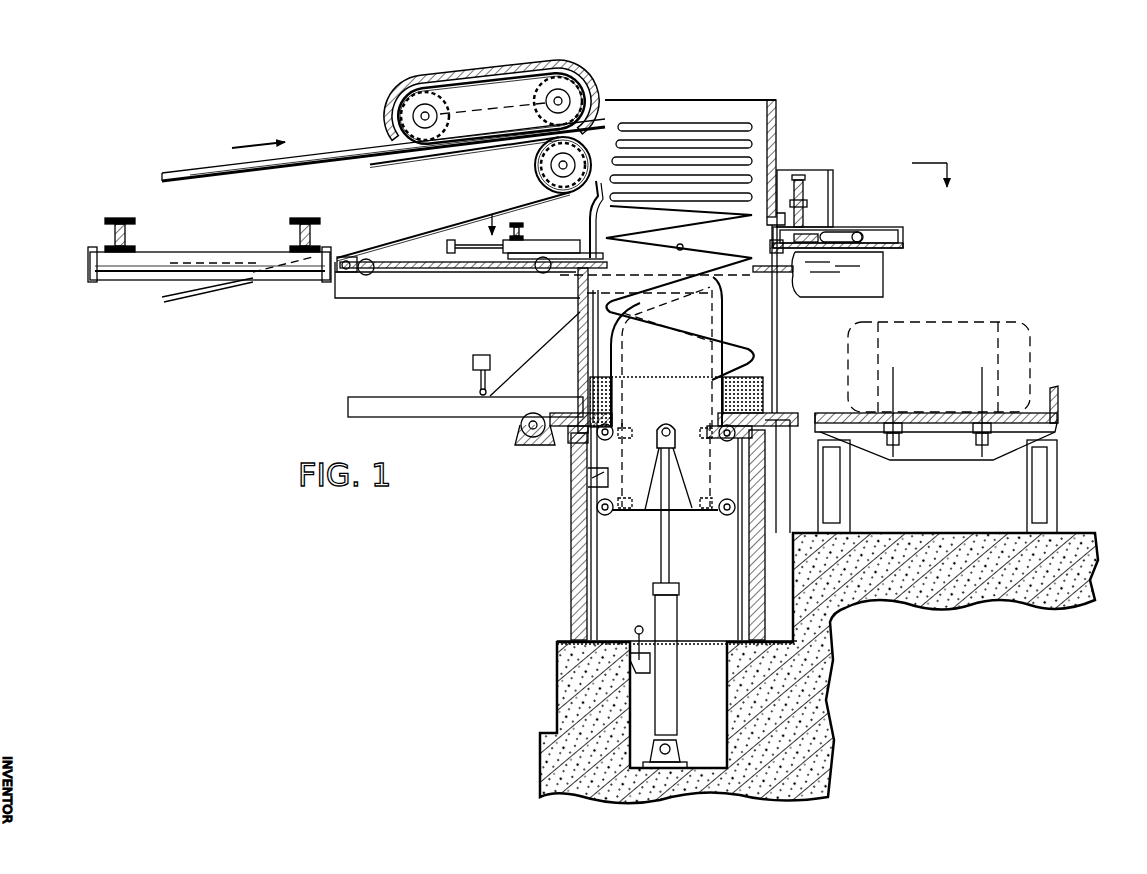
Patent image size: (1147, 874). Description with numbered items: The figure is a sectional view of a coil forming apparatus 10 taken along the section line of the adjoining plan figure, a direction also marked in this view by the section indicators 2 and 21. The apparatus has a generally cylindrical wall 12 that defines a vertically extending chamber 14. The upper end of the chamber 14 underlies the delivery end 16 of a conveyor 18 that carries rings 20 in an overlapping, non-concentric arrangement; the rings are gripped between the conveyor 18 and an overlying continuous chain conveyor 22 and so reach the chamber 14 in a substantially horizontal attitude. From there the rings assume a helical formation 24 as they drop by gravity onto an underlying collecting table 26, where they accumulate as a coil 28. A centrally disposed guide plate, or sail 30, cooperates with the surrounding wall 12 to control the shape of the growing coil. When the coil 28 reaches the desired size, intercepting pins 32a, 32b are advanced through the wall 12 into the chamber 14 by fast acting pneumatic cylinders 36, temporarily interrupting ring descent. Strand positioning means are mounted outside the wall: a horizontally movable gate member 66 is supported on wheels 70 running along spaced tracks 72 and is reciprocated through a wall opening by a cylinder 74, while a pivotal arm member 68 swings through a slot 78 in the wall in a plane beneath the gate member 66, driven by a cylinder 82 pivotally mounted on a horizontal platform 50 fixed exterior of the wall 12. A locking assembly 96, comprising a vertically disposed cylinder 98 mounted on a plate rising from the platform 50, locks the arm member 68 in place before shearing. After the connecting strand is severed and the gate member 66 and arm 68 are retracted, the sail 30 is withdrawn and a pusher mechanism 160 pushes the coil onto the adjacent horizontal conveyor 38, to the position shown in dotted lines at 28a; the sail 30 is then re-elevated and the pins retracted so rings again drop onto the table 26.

The section line 2- 2 is at (939, 179).
The coil forming apparatus 10 is at (792, 162).
The cylindrical wall 12 is at (777, 133).
The chamber 14 is at (762, 331).
The delivery end 16 is at (616, 96).
The conveyor 18 is at (425, 227).
The rings 20 is at (293, 152).
The section line 21 is at (483, 228).
The continuous chain conveyor 22 is at (492, 84).
The helical formation 24 is at (742, 170).
The collecting table 26 is at (764, 408).
The coil 28 is at (762, 388).
The coil position on adjacent conveyor 28a is at (1020, 347).
The sail 30 is at (703, 320).
The intercepting pin 32a is at (582, 248).
The intercepting pin 32b is at (683, 247).
The pneumatic cylinder 36 is at (510, 255).
The horizontal conveyor 38 is at (1063, 408).
The horizontal platform 50 is at (864, 226).
The gate member 66 is at (428, 270).
The pivotal arm member 68 is at (763, 272).
The wheels 70 is at (363, 272).
The tracks 72 is at (382, 283).
The cylinder 74 is at (123, 270).
The slot 78 is at (778, 262).
The cylinder 82 is at (837, 232).
The locking assembly 96 is at (840, 184).
The cylinder 98 is at (802, 193).
The pusher mechanism 160 is at (517, 385).